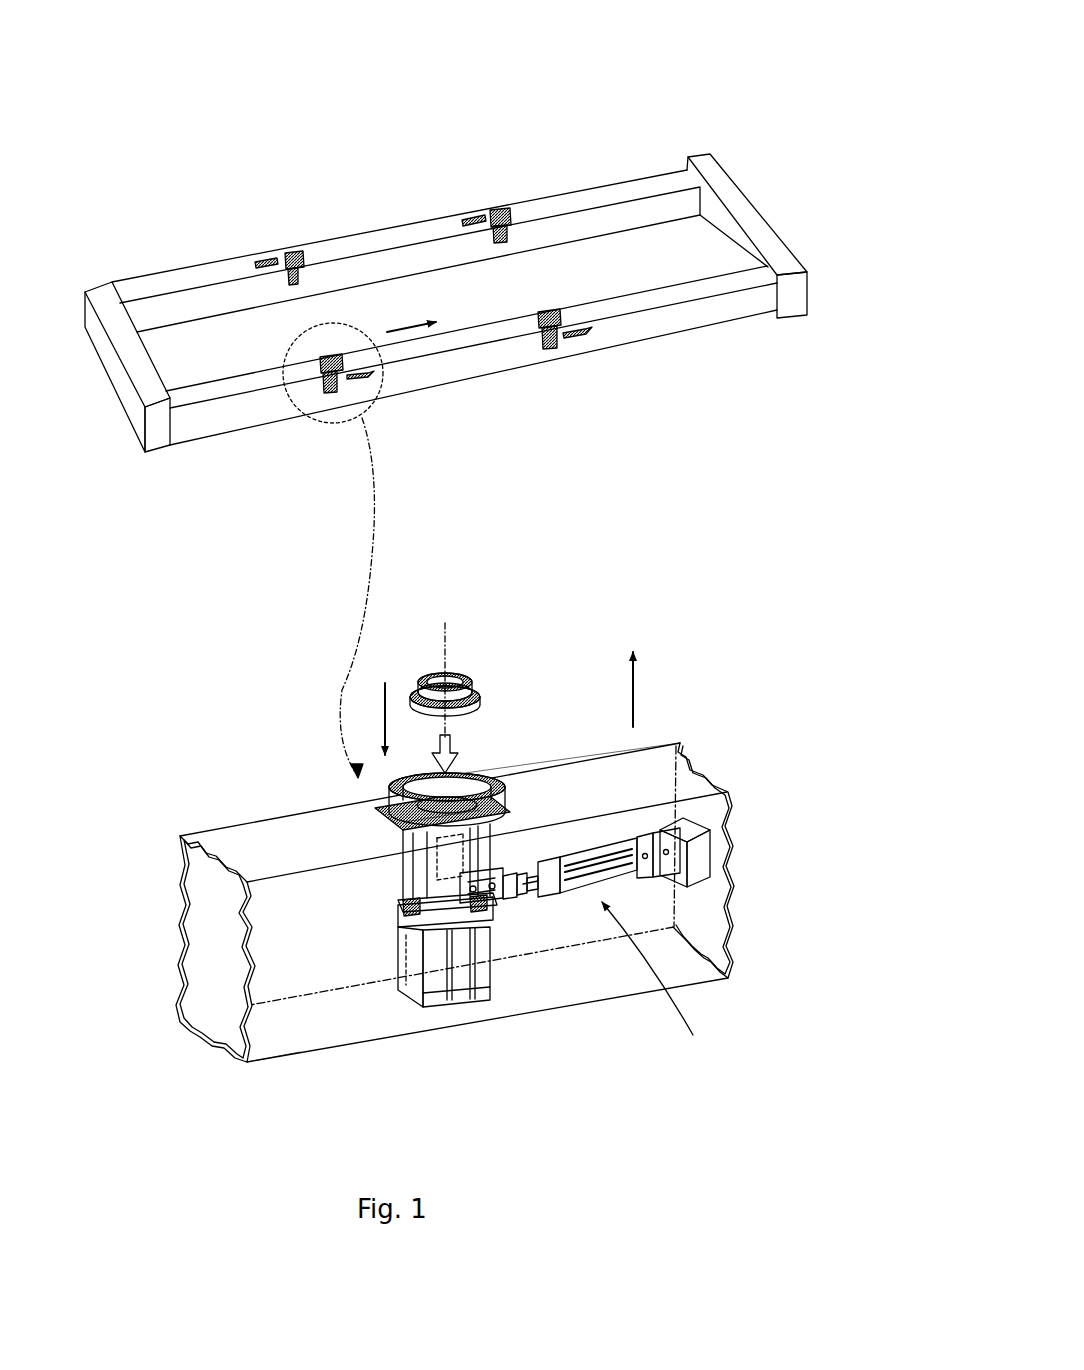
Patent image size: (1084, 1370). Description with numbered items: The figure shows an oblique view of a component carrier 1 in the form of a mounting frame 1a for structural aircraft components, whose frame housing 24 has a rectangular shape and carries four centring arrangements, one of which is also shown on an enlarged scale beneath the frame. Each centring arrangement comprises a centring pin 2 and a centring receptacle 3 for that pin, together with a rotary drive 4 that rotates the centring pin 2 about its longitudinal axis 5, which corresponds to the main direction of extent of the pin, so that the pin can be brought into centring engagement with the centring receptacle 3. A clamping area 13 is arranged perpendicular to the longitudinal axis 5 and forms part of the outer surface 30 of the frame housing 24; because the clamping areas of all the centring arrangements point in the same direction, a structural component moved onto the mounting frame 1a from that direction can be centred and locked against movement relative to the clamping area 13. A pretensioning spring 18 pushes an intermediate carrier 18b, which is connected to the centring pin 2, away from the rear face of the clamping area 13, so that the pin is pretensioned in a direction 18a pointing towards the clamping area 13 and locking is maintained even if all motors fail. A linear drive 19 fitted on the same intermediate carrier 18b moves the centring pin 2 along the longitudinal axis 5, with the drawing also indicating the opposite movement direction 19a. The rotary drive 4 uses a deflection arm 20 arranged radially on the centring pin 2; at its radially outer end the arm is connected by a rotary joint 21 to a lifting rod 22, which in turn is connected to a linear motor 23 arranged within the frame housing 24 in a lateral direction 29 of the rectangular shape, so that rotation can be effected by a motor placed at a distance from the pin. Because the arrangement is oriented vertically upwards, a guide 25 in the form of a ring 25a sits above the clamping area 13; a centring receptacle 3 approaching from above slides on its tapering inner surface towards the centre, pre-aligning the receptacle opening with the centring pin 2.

The component carrier 1 is at (672, 105).
The mounting frame 1a is at (399, 226).
The centring pin 2 is at (417, 863).
The centring receptacle 3 is at (477, 690).
The rotary drive 4 is at (658, 980).
The longitudinal axis 5 is at (448, 650).
The clamping area 13 is at (668, 782).
The pretensioning spring 18 is at (420, 898).
The direction 18a is at (376, 692).
The intermediate carrier 18b is at (403, 915).
The linear drive 19 is at (460, 980).
The lifting direction 19a is at (627, 687).
The deflection arm 20 is at (460, 882).
The rotary joint 21 is at (505, 897).
The lifting rod 22 is at (520, 890).
The linear motor 23 is at (267, 255).
The frame housing 24 is at (263, 1053).
The guide 25 is at (467, 772).
The ring 25a is at (442, 816).
The lateral direction 29 is at (400, 322).
The outer surface 30 is at (195, 275).